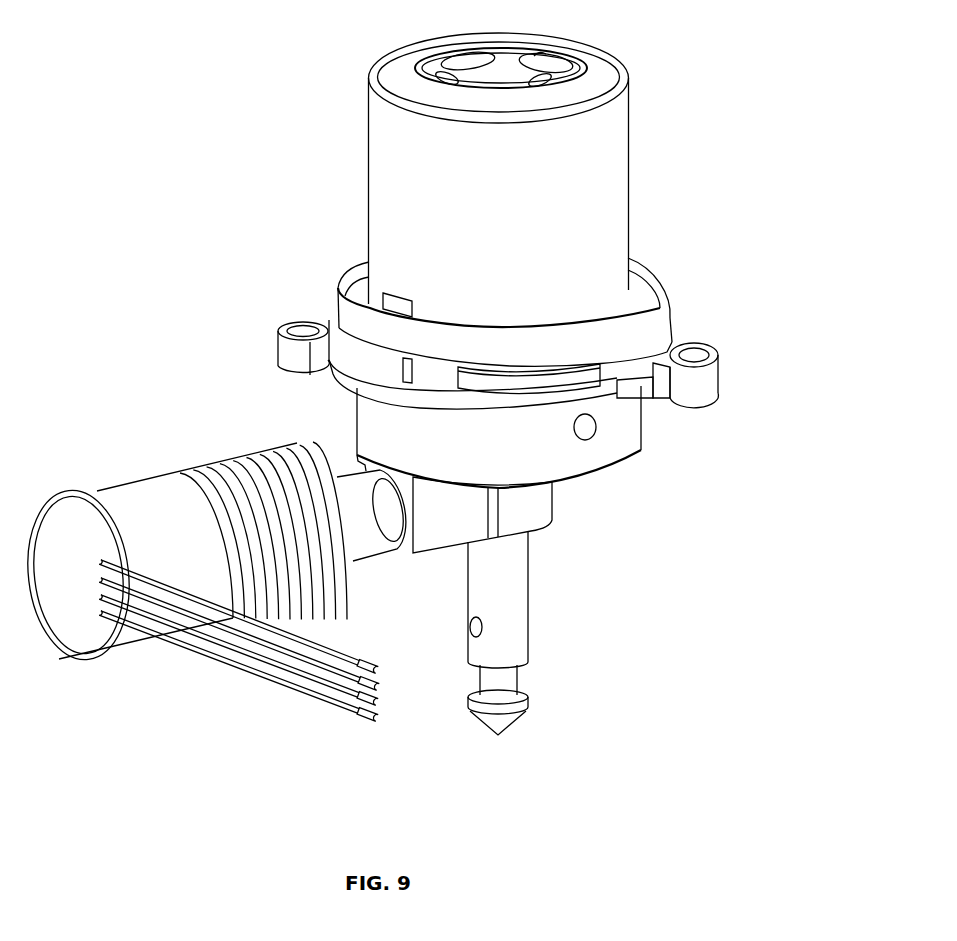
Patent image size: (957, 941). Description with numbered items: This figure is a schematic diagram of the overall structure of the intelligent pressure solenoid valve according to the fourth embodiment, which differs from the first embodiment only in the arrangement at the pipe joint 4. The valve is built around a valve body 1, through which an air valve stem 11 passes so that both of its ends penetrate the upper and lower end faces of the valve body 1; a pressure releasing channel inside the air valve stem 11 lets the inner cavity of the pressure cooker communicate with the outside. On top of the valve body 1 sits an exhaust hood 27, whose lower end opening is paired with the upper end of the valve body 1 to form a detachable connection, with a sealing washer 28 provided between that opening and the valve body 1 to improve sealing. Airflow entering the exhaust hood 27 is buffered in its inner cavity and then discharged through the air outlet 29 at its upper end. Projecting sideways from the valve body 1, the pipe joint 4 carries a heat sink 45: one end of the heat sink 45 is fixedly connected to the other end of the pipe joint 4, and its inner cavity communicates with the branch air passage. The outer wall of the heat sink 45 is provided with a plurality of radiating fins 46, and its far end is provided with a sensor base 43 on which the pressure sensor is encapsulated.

The valve body 1 is at (636, 451).
The pipe joint 4 is at (433, 527).
The air valve stem 11 is at (516, 637).
The exhaust hood 27 is at (607, 138).
The sealing washer 28 is at (608, 322).
The air outlet 29 is at (547, 64).
The sensor base 43 is at (60, 567).
The heat sink 45 is at (367, 515).
The radiating fins 46 is at (313, 557).